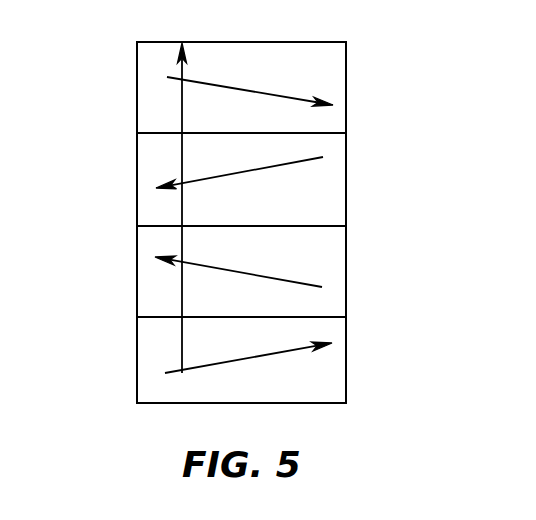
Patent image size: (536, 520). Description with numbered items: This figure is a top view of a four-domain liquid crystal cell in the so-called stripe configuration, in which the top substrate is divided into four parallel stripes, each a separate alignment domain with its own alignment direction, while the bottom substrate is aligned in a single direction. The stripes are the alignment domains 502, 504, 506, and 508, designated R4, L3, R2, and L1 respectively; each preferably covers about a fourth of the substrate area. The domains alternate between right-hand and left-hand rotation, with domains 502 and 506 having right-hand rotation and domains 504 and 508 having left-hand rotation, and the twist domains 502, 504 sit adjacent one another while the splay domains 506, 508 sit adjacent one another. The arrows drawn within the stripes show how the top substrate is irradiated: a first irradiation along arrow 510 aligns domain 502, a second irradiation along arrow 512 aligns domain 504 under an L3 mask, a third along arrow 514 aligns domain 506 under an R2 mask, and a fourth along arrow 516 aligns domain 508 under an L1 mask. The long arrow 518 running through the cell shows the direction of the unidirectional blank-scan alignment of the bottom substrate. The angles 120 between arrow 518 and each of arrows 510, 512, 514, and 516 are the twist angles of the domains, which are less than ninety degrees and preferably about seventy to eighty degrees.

The twist angle 120 is at (235, 173).
The alignment domain R4 502 is at (335, 91).
The alignment domain L3 504 is at (337, 183).
The alignment domain R2 506 is at (330, 272).
The alignment domain L1 508 is at (330, 357).
The first irradiation arrow 510 is at (247, 90).
The second irradiation arrow 512 is at (163, 177).
The third irradiation arrow 514 is at (163, 265).
The fourth irradiation arrow 516 is at (298, 358).
The bottom substrate alignment arrow 518 is at (180, 70).